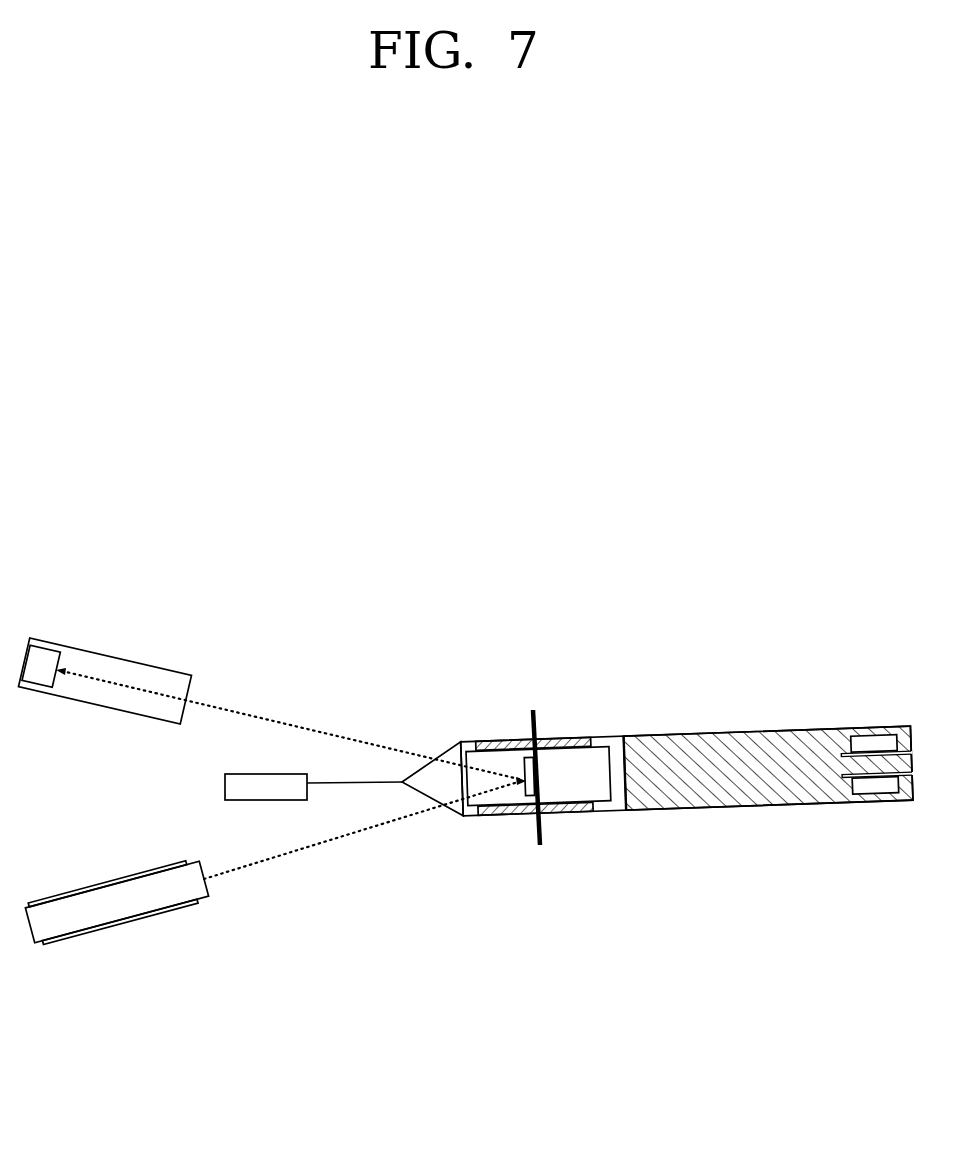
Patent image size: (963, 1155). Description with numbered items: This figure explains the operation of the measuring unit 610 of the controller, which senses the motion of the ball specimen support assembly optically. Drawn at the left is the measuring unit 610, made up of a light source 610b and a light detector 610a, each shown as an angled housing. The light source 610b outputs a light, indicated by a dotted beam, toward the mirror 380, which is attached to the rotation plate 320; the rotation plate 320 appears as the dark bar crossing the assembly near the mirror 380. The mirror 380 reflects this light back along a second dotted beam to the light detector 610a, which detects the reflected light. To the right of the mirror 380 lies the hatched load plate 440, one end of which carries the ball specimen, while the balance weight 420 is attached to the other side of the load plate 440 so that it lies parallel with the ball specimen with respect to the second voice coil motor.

The rotation plate 320 is at (537, 717).
The mirror 380 is at (518, 745).
The balance weight 420 is at (288, 790).
The load plate 440 is at (710, 784).
The measuring unit 610 is at (202, 503).
The light detector 610a is at (132, 658).
The light source 610b is at (148, 922).